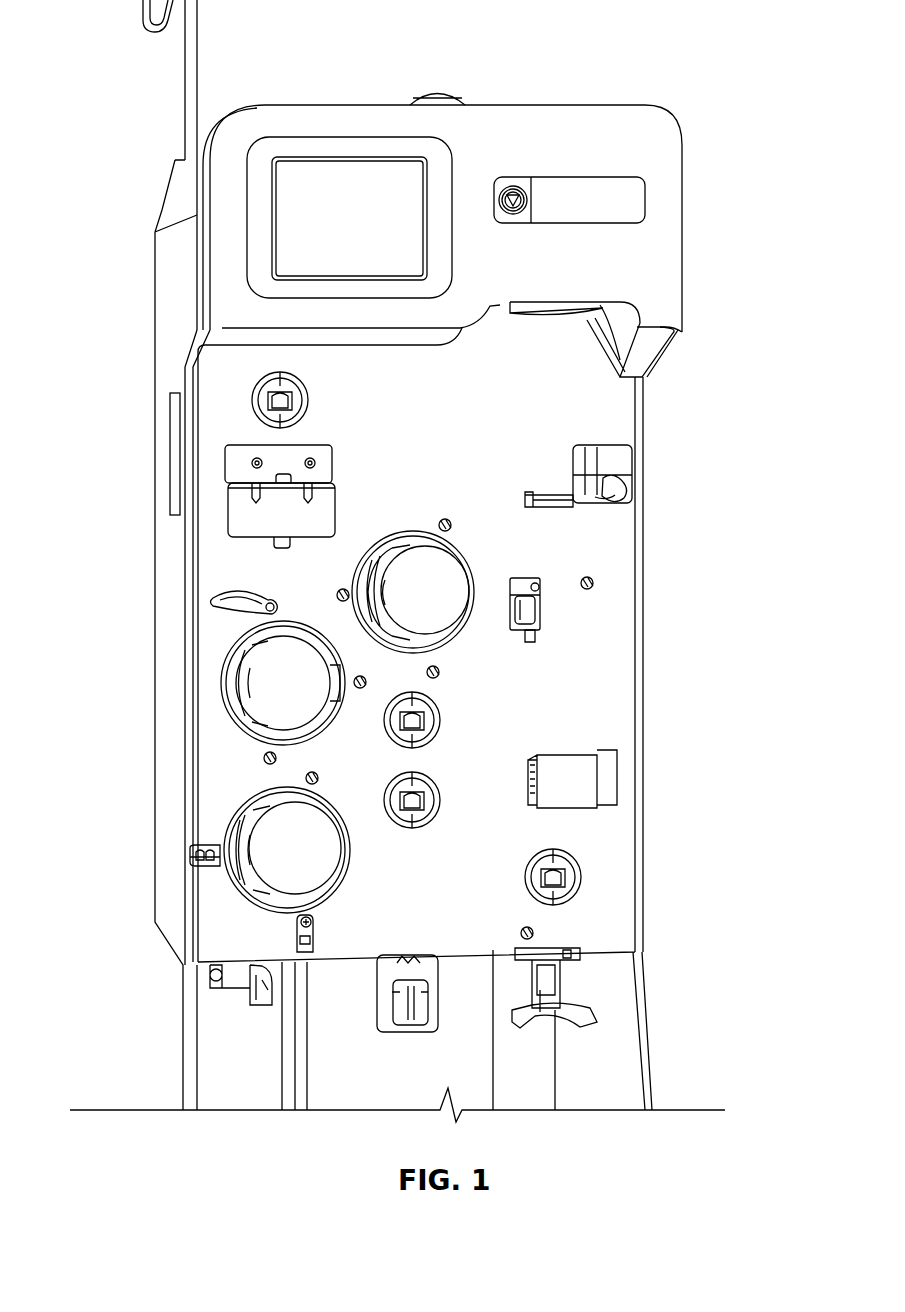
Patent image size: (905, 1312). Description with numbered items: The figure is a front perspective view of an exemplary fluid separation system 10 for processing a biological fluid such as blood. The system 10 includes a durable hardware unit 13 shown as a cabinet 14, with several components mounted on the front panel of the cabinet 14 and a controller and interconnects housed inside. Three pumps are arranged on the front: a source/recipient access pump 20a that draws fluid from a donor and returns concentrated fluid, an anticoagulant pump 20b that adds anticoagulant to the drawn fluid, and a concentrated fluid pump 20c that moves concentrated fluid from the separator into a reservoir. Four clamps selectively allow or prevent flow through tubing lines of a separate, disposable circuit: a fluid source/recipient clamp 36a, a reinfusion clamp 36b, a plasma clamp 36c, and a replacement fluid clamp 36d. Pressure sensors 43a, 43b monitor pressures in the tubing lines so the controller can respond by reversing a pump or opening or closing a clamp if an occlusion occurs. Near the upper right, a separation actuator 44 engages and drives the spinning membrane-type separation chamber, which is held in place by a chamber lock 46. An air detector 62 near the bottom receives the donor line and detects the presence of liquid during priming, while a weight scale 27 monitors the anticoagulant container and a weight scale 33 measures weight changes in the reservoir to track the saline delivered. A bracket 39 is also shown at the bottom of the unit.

The fluid separation system 10 is at (680, 112).
The hardware unit 13 is at (162, 498).
The cabinet 14 is at (672, 240).
The source/recipient access pump 20a is at (275, 850).
The anticoagulant pump 20b is at (252, 695).
The concentrated fluid pump 20c is at (447, 582).
The weight scale 27 is at (250, 988).
The weight scale 33 is at (540, 617).
The fluid source/recipient clamp 36a is at (440, 717).
The reinfusion clamp 36b is at (440, 790).
The plasma clamp 36c is at (575, 880).
The replacement fluid clamp 36d is at (282, 402).
The bracket 39 is at (560, 990).
The pressure sensor 43a is at (247, 463).
The pressure sensor 43b is at (300, 452).
The separation actuator 44 is at (587, 320).
The chamber lock 46 is at (623, 465).
The air detector 62 is at (397, 1008).